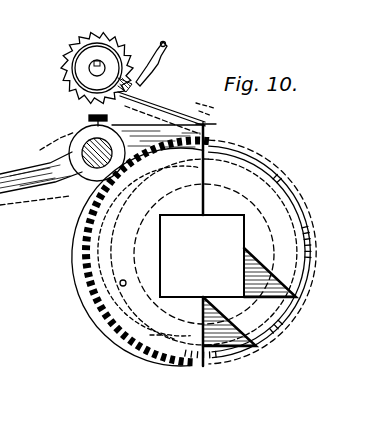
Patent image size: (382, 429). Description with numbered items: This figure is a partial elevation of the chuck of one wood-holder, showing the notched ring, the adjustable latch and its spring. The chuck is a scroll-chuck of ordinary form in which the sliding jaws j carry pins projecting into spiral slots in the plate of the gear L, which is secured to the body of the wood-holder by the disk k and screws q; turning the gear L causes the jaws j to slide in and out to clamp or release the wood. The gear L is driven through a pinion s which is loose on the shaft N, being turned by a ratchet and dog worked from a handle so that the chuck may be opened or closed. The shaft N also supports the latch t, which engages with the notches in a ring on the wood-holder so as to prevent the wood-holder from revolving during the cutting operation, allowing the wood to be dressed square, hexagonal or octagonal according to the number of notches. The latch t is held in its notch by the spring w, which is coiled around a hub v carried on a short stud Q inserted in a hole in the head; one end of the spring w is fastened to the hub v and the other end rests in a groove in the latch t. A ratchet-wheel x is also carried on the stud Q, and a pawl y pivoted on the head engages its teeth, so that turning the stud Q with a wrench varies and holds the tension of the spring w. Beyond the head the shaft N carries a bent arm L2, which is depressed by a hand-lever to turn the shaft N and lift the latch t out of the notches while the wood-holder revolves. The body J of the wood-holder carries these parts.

The ratchet-wheel x is at (76, 44).
The hub v is at (84, 58).
The stud Q is at (89, 69).
The pawl y is at (167, 57).
The spring w is at (166, 113).
The latch t is at (215, 127).
The shaft N is at (84, 151).
The bent arm L2 is at (41, 173).
The disc J is at (179, 257).
The gear L is at (126, 334).
The pinion s is at (250, 252).
The screw q is at (121, 285).
The disk k is at (163, 328).
The sliding jaw j is at (228, 245).